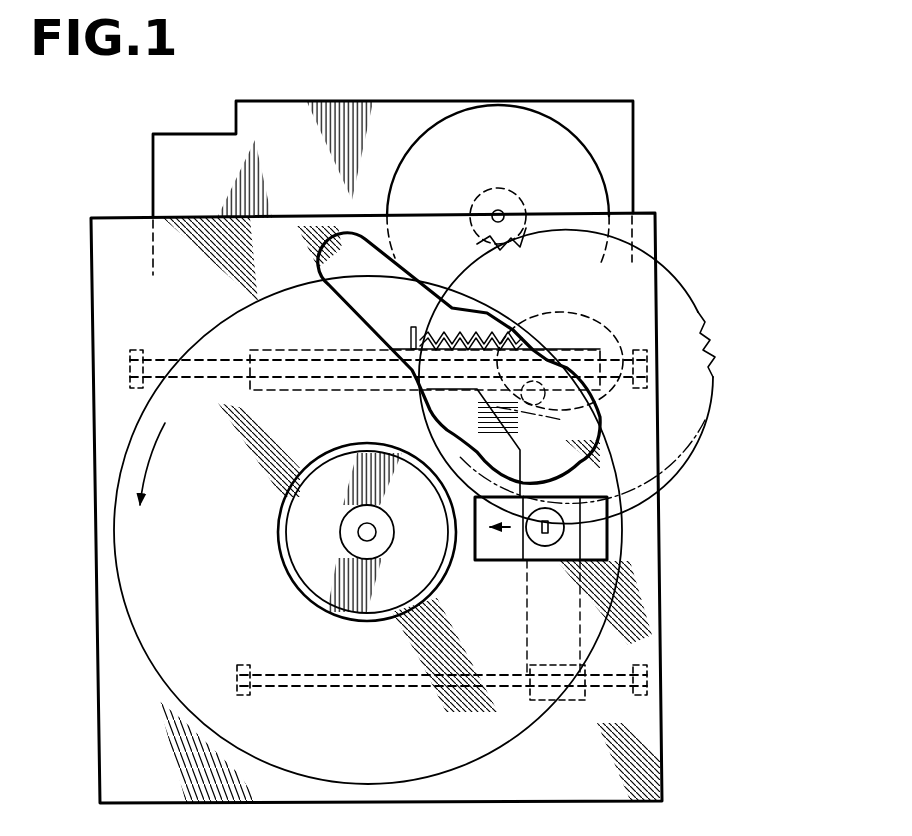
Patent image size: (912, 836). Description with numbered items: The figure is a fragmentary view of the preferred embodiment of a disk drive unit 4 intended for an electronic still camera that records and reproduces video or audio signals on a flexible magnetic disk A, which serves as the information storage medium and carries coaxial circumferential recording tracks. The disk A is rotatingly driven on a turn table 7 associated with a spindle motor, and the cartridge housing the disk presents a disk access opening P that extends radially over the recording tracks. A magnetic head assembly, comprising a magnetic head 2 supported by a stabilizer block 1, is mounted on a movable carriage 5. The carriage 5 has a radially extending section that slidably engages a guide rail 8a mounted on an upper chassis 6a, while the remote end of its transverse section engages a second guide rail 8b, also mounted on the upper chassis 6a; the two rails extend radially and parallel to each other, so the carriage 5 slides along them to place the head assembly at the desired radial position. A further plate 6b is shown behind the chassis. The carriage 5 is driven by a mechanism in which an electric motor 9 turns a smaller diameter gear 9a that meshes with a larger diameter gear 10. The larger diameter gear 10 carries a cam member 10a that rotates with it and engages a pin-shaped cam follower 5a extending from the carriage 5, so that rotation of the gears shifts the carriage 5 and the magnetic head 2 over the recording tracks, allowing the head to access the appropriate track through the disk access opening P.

The stabilizer block 1 is at (560, 540).
The magnetic head 2 is at (549, 527).
The disk drive unit 4 is at (708, 293).
The carriage 5 is at (560, 452).
The cam follower 5a is at (560, 420).
The upper chassis 6a is at (108, 267).
The rear frame plate 6b is at (290, 115).
The turn table 7 is at (308, 543).
The guide rail 8a is at (208, 376).
The guide rail 8b is at (370, 688).
The electric motor 9 is at (502, 128).
The smaller diameter gear 9a is at (520, 200).
The larger diameter gear 10 is at (716, 376).
The cam member 10a is at (600, 311).
The magnetic disk A is at (603, 642).
The disk access opening P is at (503, 540).